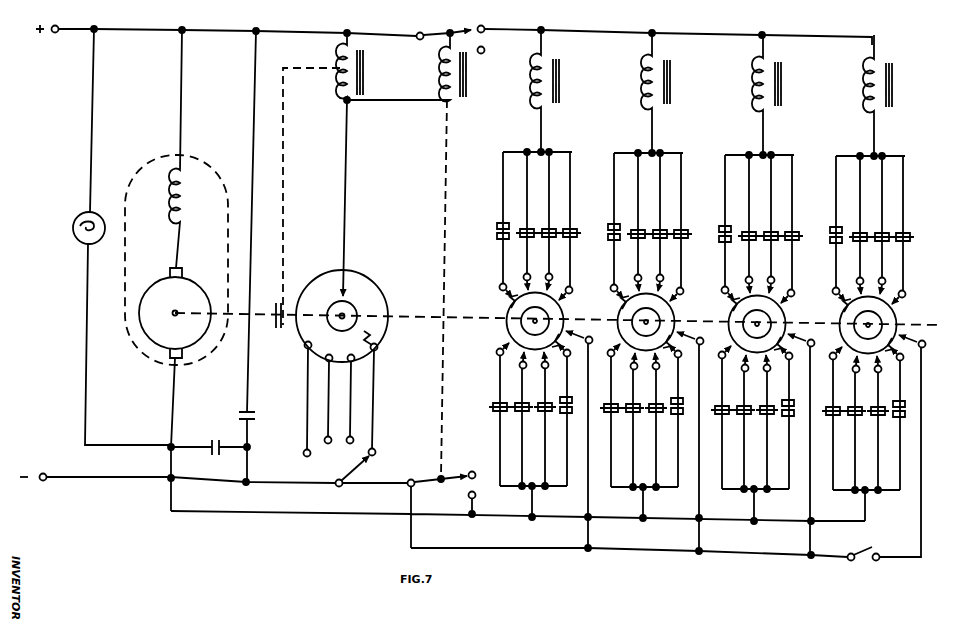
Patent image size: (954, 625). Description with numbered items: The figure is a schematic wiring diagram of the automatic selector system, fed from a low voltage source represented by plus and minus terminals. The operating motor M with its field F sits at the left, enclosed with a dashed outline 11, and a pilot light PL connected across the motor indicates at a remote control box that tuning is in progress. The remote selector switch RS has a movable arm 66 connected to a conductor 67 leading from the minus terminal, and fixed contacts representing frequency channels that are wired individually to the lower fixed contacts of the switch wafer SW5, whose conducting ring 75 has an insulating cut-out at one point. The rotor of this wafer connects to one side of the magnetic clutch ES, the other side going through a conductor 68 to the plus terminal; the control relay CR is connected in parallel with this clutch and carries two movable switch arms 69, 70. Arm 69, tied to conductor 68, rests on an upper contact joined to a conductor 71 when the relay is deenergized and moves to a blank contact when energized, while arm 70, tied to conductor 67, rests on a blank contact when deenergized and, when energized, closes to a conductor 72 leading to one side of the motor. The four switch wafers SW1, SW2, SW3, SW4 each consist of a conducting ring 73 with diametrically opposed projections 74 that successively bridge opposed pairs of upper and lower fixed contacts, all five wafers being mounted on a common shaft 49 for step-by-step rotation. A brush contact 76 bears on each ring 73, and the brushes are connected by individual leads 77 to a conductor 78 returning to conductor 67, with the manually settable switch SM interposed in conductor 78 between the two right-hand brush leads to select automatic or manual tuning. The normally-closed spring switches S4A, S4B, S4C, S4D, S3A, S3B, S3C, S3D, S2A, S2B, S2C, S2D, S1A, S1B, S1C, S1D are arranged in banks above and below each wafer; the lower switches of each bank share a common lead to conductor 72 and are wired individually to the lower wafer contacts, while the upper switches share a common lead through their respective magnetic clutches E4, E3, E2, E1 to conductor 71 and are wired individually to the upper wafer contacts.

The conductor 68 is at (298, 31).
The movable switch arm 69 is at (445, 30).
The conductor 71 is at (621, 30).
The movable switch arm 70 is at (452, 471).
The movable arm 66 is at (367, 462).
The conductor 67 is at (306, 486).
The conductor 72 is at (360, 514).
The conductor 78 is at (680, 531).
The conducting ring 73 is at (518, 335).
The projection 74 is at (524, 322).
The conducting ring 75 is at (327, 298).
The brush contact 76 is at (581, 330).
The lead 77 is at (544, 500).
The shaft 49 is at (405, 323).
The motor enclosure 11 is at (240, 320).
The pilot light PL is at (73, 229).
The field F is at (186, 205).
The operating motor M is at (212, 290).
The magnetic clutch ES is at (370, 85).
The control relay CR is at (470, 85).
The remote selector switch RS is at (322, 460).
The switch SM is at (885, 464).
The switch wafer SW5 is at (388, 305).
The switch wafer SW4 is at (545, 322).
The switch wafer SW3 is at (650, 391).
The switch wafer SW2 is at (761, 393).
The switch wafer SW1 is at (874, 394).
The magnetic clutch E4 is at (556, 91).
The magnetic clutch E3 is at (667, 92).
The magnetic clutch E2 is at (778, 94).
The magnetic clutch E1 is at (889, 95).
The spring switch S4A is at (537, 319).
The spring switch S4B is at (536, 319).
The spring switch S4C is at (535, 319).
The spring switch S4D is at (535, 319).
The spring switch S3A is at (648, 320).
The spring switch S3B is at (647, 320).
The spring switch S3C is at (646, 320).
The spring switch S3D is at (646, 320).
The spring switch S2A is at (759, 322).
The spring switch S2B is at (758, 322).
The spring switch S2C is at (757, 322).
The spring switch S2D is at (757, 322).
The spring switch S1A is at (870, 323).
The spring switch S1B is at (869, 323).
The spring switch S1C is at (868, 323).
The spring switch S1D is at (868, 323).